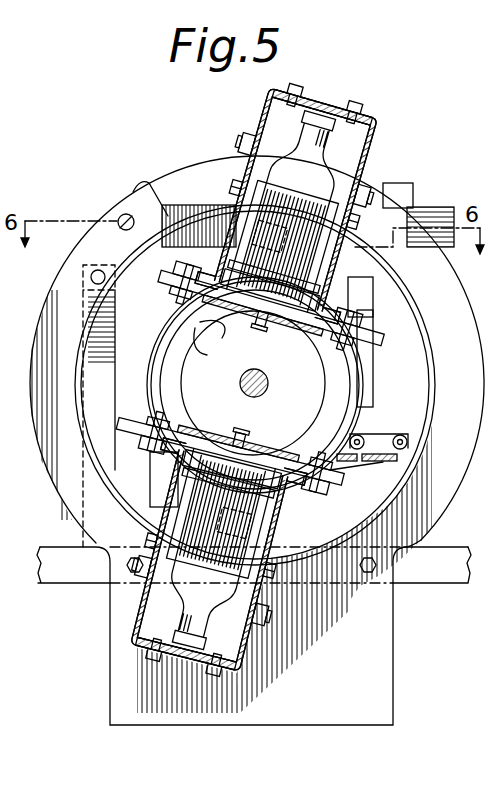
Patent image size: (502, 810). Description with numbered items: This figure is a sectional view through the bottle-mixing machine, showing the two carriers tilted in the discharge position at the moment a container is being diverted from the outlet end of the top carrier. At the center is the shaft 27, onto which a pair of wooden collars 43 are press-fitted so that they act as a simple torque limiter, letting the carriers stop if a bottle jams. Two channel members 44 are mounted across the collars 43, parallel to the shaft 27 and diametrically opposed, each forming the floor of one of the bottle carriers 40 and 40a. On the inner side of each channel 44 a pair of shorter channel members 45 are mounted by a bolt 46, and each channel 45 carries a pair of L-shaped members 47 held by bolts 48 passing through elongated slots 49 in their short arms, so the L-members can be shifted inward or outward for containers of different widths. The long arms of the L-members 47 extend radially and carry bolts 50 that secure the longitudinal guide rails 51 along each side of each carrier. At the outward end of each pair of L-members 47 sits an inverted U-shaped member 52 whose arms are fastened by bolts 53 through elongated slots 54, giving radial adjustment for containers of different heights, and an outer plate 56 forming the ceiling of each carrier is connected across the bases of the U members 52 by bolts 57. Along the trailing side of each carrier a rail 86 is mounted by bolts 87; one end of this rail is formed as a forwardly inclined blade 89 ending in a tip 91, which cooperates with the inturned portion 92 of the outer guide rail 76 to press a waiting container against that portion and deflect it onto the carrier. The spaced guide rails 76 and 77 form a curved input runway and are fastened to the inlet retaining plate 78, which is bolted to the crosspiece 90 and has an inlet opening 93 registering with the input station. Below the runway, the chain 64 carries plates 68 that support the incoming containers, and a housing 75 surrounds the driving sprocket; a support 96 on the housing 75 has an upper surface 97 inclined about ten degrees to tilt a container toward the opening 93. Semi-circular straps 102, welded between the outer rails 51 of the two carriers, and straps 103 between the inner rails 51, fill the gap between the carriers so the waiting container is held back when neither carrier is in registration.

The shaft 27 is at (268, 380).
The bottle carrier 40 is at (338, 93).
The bottle carrier 40a is at (182, 665).
The collar 43 is at (308, 395).
The channel member 44 is at (268, 323).
The shorter channel member 45 is at (374, 342).
The bolt 46 is at (245, 315).
The L-shaped member 47 is at (215, 288).
The bolt 48 is at (347, 340).
The elongated slot 49 is at (172, 290).
The bolt 50 is at (236, 195).
The guide rail 51 is at (262, 205).
The inverted U-shaped member 52 is at (380, 138).
The bolt 53 is at (250, 158).
The elongated slot 54 is at (240, 138).
The outer plate 56 is at (368, 117).
The bolt 57 is at (296, 88).
The chain 64 is at (372, 438).
The plate 68 is at (384, 462).
The housing 75 is at (163, 353).
The guide rail 76 is at (176, 207).
The guide rail 77 is at (432, 210).
The inlet retaining plate 78 is at (118, 218).
The rail 86 is at (350, 240).
The bolt 87 is at (352, 252).
The hook or blade 89 is at (305, 252).
The crosspiece 90 is at (453, 556).
The tip 91 is at (278, 236).
The inturned portion 92 is at (222, 342).
The inlet opening 93 is at (152, 186).
The support 96 is at (170, 312).
The upper surface 97 is at (212, 352).
The semi-circular strap 102 is at (436, 397).
The semi-circular strap 103 is at (373, 393).